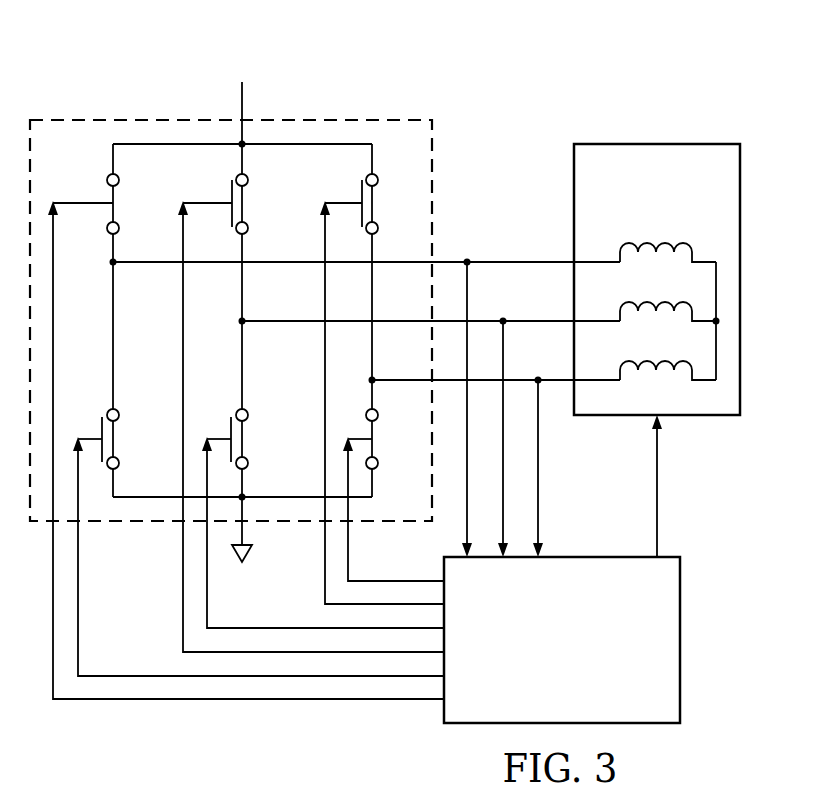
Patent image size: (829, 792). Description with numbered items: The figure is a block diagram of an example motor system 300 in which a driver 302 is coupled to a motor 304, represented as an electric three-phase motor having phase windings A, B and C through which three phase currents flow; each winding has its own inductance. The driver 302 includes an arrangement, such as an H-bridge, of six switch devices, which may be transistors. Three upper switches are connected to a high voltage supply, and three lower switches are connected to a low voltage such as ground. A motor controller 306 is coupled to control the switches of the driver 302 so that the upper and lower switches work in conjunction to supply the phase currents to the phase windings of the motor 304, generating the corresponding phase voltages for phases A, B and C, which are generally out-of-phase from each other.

The motor system 300 is at (513, 61).
The driver 302 is at (141, 115).
The motor 304 is at (668, 143).
The motor controller 306 is at (540, 689).